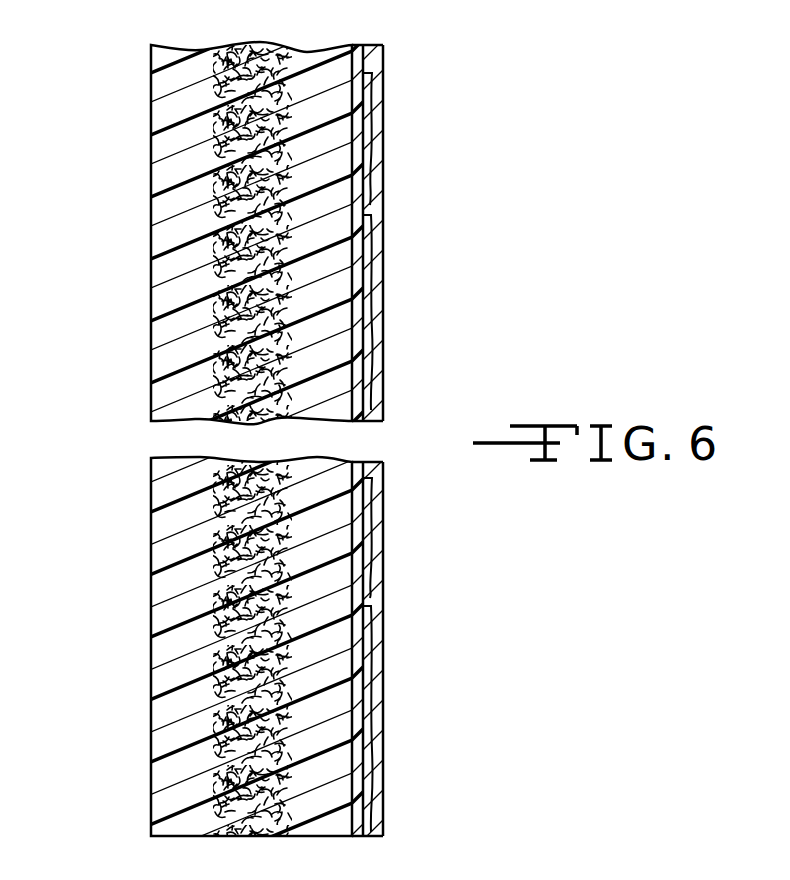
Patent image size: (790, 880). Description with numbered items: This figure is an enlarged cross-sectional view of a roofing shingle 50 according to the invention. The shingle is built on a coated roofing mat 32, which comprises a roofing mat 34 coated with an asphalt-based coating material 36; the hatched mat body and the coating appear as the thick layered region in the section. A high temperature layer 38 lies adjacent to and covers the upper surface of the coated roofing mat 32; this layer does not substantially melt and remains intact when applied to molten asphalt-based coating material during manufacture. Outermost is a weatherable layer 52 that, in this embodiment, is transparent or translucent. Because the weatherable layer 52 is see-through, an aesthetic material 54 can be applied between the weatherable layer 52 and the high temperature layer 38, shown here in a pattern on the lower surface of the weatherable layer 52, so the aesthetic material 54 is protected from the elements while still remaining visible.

The roofing shingle 50 is at (100, 100).
The coated roofing mat 32 is at (363, 220).
The roofing mat 34 is at (240, 237).
The asphalt-based coating material 36 is at (173, 298).
The high temperature layer 38 is at (367, 264).
The weatherable layer 52 is at (383, 540).
The aesthetic material 54 is at (374, 582).